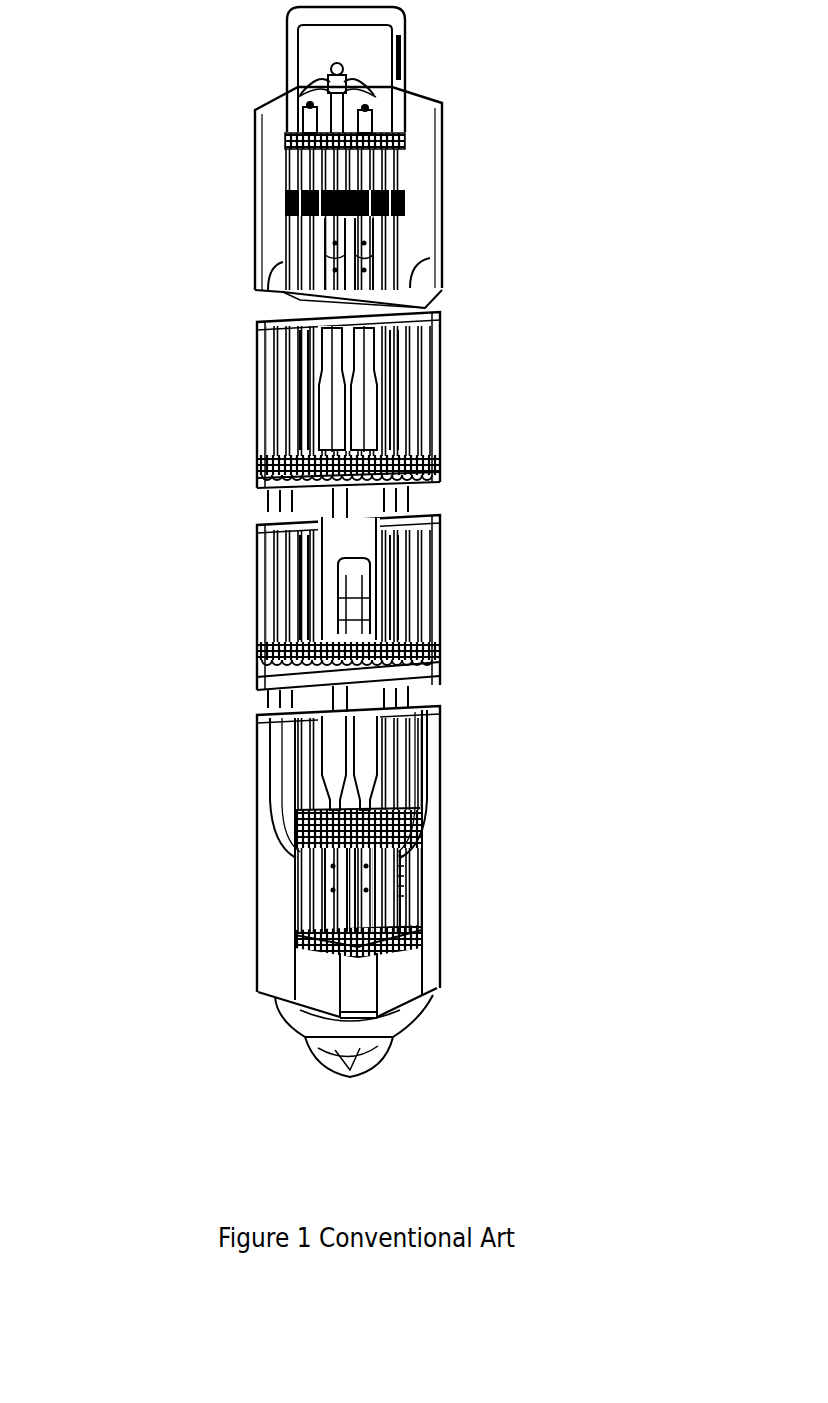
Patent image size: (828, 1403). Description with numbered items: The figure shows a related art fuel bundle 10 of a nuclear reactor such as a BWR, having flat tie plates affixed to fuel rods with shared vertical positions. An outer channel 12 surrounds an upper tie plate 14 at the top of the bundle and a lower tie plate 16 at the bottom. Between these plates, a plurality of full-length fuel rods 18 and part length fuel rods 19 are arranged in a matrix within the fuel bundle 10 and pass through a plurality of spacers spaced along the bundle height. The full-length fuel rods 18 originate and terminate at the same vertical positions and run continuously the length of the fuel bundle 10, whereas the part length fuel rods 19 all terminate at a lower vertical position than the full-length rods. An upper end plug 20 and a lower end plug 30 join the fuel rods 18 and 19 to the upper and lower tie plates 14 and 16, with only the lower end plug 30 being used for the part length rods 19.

The fuel bundle 10 is at (467, 128).
The outer channel 12 is at (441, 228).
The upper tie plate 14 is at (286, 173).
The lower tie plate 16 is at (412, 976).
The full-length fuel rods 18 is at (273, 421).
The part length fuel rods 19 is at (358, 620).
The upper end plug 20 is at (300, 110).
The lower end plug 30 is at (353, 908).